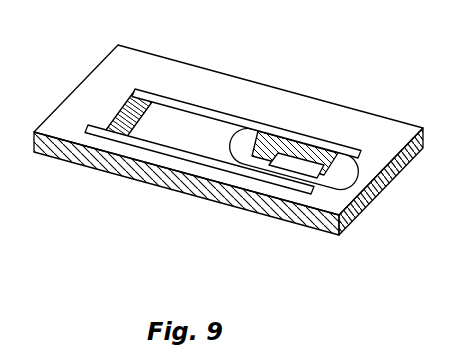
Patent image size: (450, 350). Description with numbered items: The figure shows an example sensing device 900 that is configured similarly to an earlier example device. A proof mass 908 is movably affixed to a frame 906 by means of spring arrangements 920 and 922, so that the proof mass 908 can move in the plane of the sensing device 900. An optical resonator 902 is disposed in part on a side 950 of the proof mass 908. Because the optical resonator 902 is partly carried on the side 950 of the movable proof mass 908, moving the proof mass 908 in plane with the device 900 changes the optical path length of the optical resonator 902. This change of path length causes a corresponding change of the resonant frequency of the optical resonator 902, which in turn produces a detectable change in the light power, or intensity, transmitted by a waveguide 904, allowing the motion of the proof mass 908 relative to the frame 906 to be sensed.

The sensing device 900 is at (228, 147).
The optical resonator 902 is at (318, 184).
The waveguide 904 is at (346, 184).
The frame 906 is at (242, 202).
The proof mass 908 is at (190, 138).
The spring arrangement 920 is at (122, 139).
The spring arrangement 922 is at (160, 95).
The side of proof mass 950 is at (268, 138).